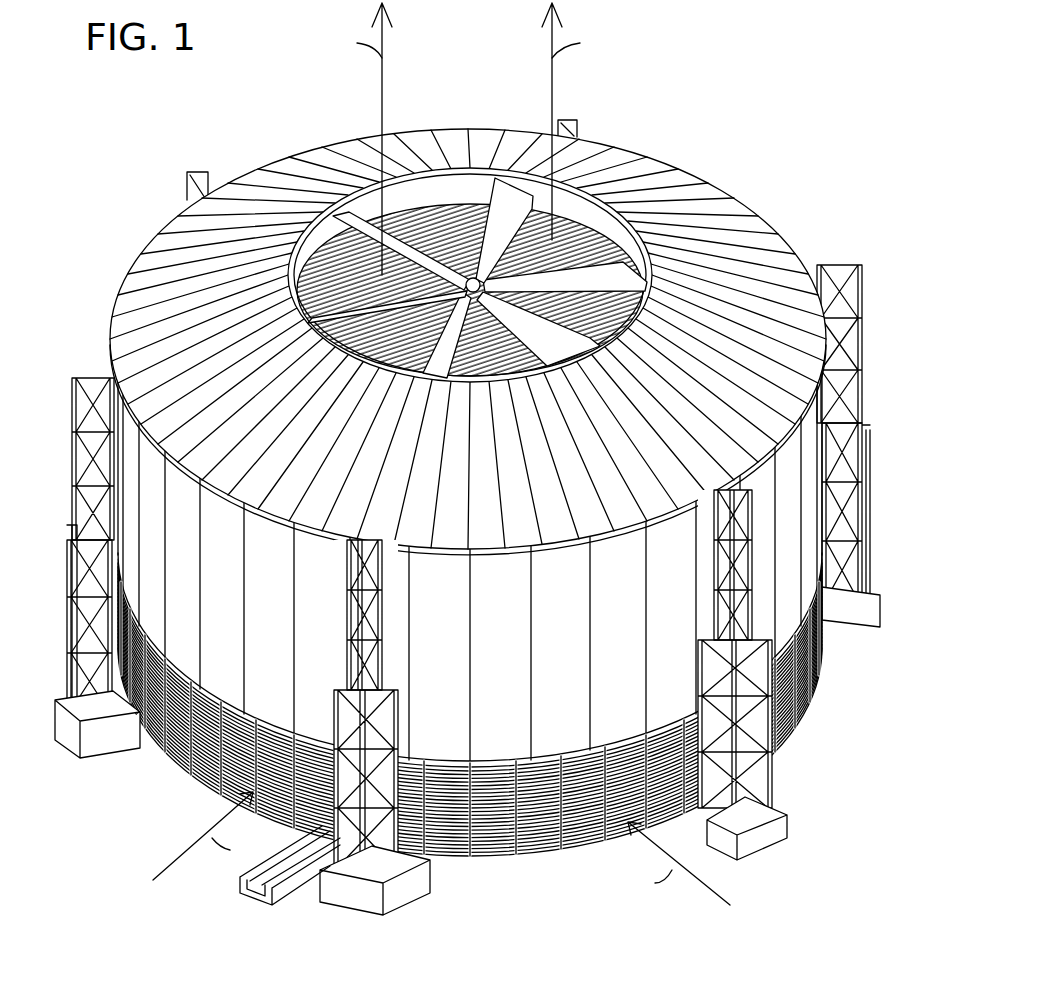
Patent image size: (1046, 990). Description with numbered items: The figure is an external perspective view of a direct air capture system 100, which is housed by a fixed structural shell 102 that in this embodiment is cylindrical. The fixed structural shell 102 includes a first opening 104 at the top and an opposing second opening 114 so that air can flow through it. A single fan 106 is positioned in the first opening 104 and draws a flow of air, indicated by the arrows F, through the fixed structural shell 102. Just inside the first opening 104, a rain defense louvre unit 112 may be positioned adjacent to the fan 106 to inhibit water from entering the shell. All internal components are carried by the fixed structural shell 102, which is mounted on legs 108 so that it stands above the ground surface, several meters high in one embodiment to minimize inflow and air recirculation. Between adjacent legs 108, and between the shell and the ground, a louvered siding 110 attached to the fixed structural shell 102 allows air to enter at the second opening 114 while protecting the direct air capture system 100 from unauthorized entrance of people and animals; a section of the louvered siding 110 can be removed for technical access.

The direct air capture system 100 is at (447, 464).
The fixed structural shell 102 is at (93, 313).
The first opening 104 is at (327, 230).
The fan 106 is at (597, 275).
The legs 108 is at (63, 590).
The louvered siding 110 is at (485, 830).
The rain defense louvre unit 112 is at (436, 226).
The second opening 114 is at (190, 767).